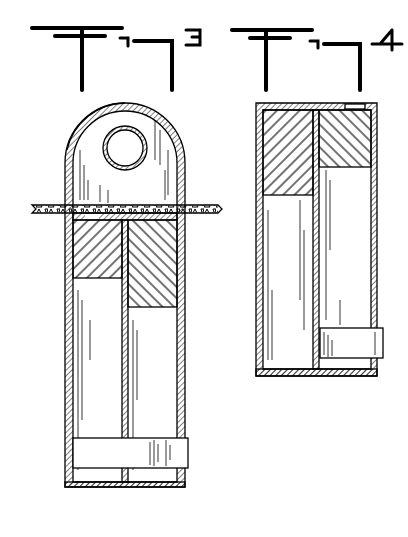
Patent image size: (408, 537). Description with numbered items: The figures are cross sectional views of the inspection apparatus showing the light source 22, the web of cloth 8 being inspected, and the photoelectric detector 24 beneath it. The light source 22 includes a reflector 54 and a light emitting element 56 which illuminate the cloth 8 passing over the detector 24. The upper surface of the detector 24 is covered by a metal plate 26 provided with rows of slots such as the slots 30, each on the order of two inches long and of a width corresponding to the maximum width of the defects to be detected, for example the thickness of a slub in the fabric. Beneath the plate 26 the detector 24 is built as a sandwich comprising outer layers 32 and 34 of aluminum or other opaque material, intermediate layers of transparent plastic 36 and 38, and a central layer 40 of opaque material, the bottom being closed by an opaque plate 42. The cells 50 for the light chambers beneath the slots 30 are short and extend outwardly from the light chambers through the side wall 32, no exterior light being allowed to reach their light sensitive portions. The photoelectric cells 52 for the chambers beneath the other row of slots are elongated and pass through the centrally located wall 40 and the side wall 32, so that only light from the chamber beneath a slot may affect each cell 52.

In FIG. 3, the cloth 8 is at (50, 200).
In FIG. 3, the light source 22 is at (190, 108).
In FIG. 3, the detector 24 is at (131, 494).
In FIG. 4, the detector 24 is at (290, 382).
In FIG. 4, the metal plate 26 is at (290, 93).
In FIG. 4, the slots 30 is at (356, 104).
In FIG. 3, the outer layer 32 is at (180, 240).
In FIG. 4, the outer layer 32 is at (369, 300).
In FIG. 3, the outer layer 34 is at (64, 409).
In FIG. 4, the outer layer 34 is at (256, 298).
In FIG. 3, the transparent plastic layer 36 is at (150, 308).
In FIG. 4, the transparent plastic layer 36 is at (345, 167).
In FIG. 3, the transparent plastic layer 38 is at (97, 279).
In FIG. 4, the transparent plastic layer 38 is at (287, 195).
In FIG. 3, the central layer 40 is at (129, 409).
In FIG. 4, the central layer 40 is at (310, 292).
In FIG. 3, the opaque plate 42 is at (153, 489).
In FIG. 4, the opaque plate 42 is at (354, 376).
In FIG. 4, the cells 50 is at (386, 318).
In FIG. 3, the photoelectric cells 52 is at (188, 453).
In FIG. 3, the reflector 54 is at (92, 112).
In FIG. 3, the light emitting element 56 is at (113, 167).